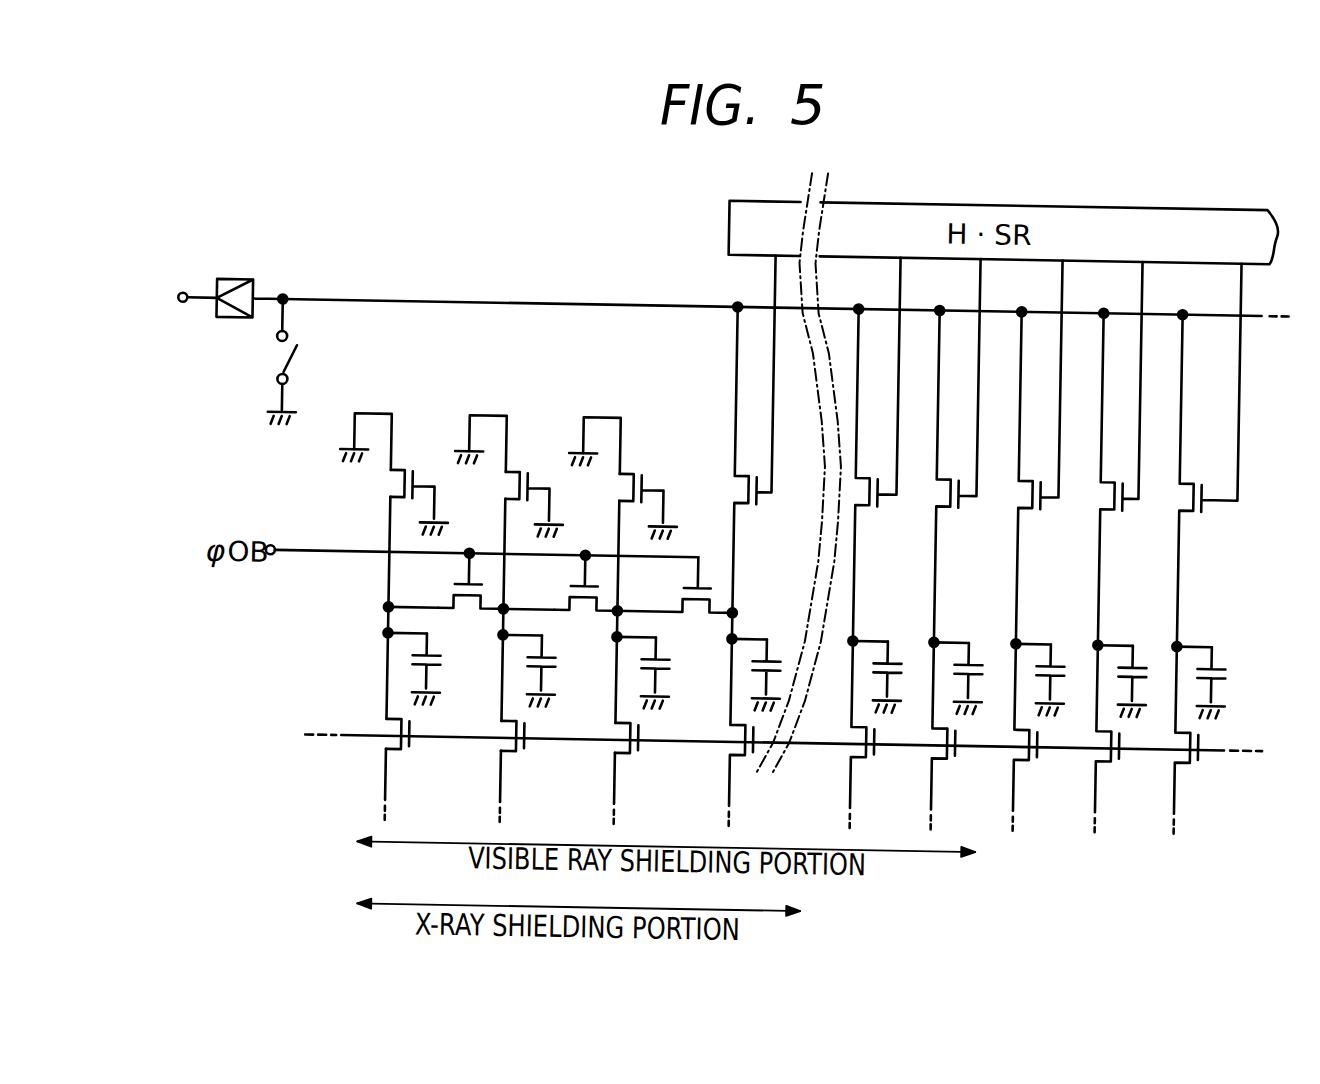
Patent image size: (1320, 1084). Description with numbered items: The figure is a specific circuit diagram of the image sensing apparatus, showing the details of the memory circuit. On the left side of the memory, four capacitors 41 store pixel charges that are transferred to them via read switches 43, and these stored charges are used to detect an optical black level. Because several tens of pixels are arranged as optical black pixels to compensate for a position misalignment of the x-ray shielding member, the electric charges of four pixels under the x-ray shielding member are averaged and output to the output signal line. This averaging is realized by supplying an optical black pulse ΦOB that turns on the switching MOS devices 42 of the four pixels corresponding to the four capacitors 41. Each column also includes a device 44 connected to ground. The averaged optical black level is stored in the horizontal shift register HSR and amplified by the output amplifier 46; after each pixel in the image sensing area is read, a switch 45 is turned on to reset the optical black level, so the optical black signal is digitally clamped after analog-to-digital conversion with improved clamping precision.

The capacitor 41 is at (439, 655).
The switching MOS device 42 is at (453, 602).
The read switch 43 is at (402, 758).
The reset transistor 44 is at (392, 494).
The switch 45 is at (302, 361).
The output amplifier 46 is at (231, 288).